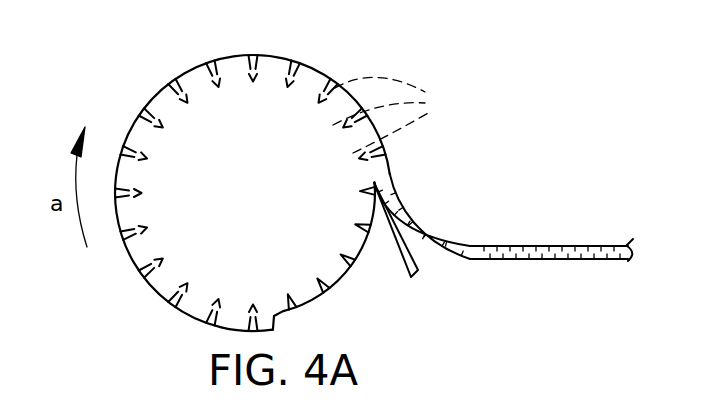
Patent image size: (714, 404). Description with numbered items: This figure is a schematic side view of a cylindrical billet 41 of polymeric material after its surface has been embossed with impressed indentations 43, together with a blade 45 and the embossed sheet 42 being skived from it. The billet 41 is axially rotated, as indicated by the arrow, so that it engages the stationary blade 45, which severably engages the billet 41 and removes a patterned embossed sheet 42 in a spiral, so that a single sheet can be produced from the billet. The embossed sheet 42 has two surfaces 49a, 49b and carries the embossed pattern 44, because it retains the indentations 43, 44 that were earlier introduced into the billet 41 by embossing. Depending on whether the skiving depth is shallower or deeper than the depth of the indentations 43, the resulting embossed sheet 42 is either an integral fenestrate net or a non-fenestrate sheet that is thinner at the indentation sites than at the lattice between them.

The billet 41 is at (248, 205).
The embossed sheet 42 is at (437, 233).
The impressed indentations 43 is at (394, 115).
The embossed pattern 44 is at (622, 245).
The blade 45 is at (407, 267).
The surface of embossed sheet 49a is at (517, 245).
The surface of embossed sheet 49b is at (516, 260).